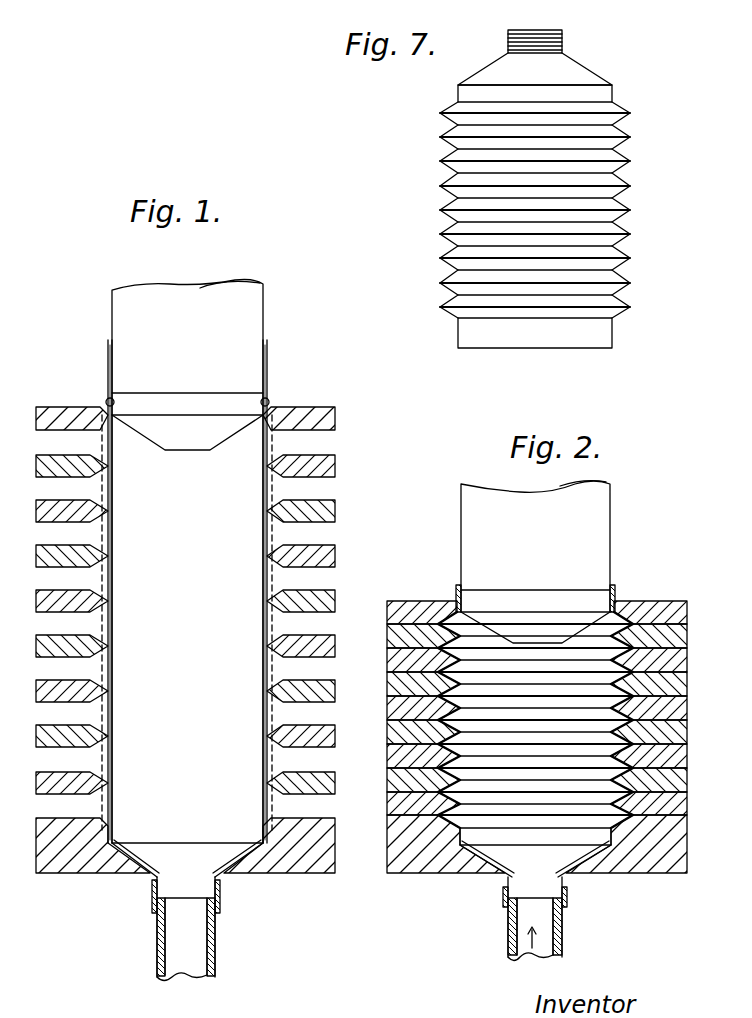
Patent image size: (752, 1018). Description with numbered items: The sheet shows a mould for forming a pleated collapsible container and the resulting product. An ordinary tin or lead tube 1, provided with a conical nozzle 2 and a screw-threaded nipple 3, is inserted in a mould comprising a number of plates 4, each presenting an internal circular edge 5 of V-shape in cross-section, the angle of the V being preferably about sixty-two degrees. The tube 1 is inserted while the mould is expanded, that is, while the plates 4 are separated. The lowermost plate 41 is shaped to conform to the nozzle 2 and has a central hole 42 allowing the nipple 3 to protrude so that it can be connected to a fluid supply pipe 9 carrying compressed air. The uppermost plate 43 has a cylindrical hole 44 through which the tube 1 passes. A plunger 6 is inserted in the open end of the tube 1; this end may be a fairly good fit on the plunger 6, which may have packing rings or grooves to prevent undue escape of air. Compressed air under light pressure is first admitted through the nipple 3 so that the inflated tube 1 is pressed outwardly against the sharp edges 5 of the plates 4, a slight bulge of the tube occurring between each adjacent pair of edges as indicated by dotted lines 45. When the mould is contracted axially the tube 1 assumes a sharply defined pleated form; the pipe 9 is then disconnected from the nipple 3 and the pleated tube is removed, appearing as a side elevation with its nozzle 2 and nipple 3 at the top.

In FIG. 1, the tube 1 is at (268, 348).
In FIG. 7, the tube 1 is at (612, 92).
In FIG. 2, the tube 1 is at (447, 612).
In FIG. 1, the conical nozzle 2 is at (128, 866).
In FIG. 7, the conical nozzle 2 is at (578, 80).
In FIG. 2, the conical nozzle 2 is at (490, 862).
In FIG. 1, the screw-threaded nipple 3 is at (156, 898).
In FIG. 7, the screw-threaded nipple 3 is at (563, 46).
In FIG. 2, the screw-threaded nipple 3 is at (512, 898).
In FIG. 1, the plates 4 is at (322, 470).
In FIG. 2, the plates 4 is at (668, 642).
In FIG. 1, the internal circular edge 5 is at (264, 676).
In FIG. 1, the plunger 6 is at (240, 296).
In FIG. 2, the plunger 6 is at (600, 505).
In FIG. 1, the pipe 9 is at (158, 962).
In FIG. 2, the pipe 9 is at (563, 927).
In FIG. 1, the lowermost plate 41 is at (72, 868).
In FIG. 2, the lowermost plate 41 is at (420, 868).
In FIG. 1, the central hole 42 is at (218, 874).
In FIG. 1, the uppermost plate 43 is at (330, 414).
In FIG. 2, the uppermost plate 43 is at (650, 602).
In FIG. 1, the cylindrical hole 44 is at (272, 408).
In FIG. 1, the dotted lines 45 is at (100, 487).